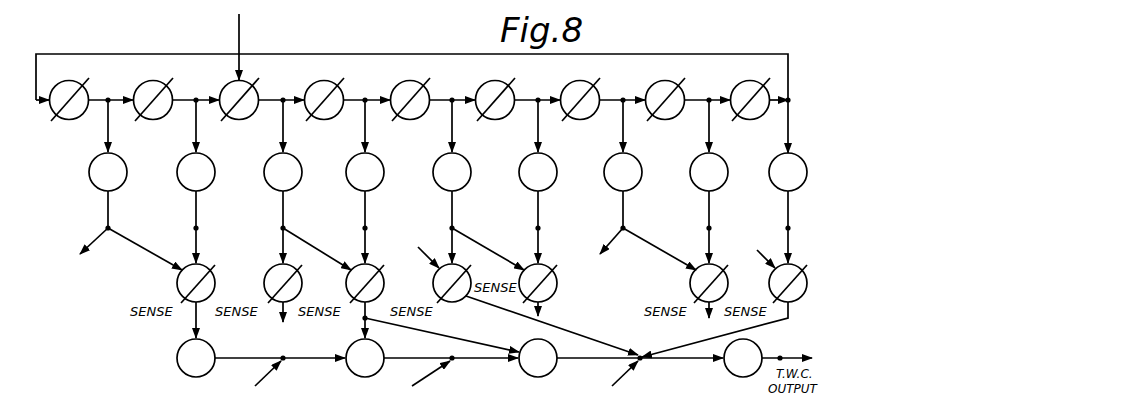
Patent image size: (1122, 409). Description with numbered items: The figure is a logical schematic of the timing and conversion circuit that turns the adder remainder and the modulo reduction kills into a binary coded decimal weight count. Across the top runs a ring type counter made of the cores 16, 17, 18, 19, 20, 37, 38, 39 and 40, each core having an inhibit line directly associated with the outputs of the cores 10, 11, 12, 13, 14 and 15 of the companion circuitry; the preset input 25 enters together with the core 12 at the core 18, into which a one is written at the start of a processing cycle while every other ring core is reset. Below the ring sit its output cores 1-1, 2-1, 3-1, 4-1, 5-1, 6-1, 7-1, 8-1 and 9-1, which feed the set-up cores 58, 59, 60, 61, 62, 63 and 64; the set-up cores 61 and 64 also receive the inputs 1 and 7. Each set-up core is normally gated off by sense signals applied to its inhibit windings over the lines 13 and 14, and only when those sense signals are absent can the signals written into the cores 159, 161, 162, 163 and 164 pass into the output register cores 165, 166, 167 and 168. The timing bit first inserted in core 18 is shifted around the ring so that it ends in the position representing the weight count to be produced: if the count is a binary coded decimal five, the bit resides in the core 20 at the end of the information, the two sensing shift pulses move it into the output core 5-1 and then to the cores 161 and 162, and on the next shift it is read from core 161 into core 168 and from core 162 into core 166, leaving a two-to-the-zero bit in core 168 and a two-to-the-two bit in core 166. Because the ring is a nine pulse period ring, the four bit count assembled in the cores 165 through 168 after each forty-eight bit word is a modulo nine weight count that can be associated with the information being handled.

The core 16 is at (70, 99).
The core 17 is at (154, 99).
The core 18 is at (240, 99).
The core 19 is at (325, 99).
The core 20 is at (411, 99).
The core 37 is at (496, 99).
The core 38 is at (581, 99).
The core 39 is at (666, 99).
The core 40 is at (751, 99).
The core 10 is at (276, 82).
The core 11 is at (646, 82).
The core 15 is at (276, 82).
The core 12 is at (229, 46).
The preset timing pulse T25 25 is at (259, 19).
The output core 1-1 is at (108, 172).
The output core 2-1 is at (196, 172).
The output core 3-1 is at (283, 172).
The output core 4-1 is at (365, 172).
The output core 5-1 is at (452, 172).
The output core 6-1 is at (538, 172).
The output core 7-1 is at (623, 172).
The output core 8-1 is at (709, 172).
The output core 9-1 is at (788, 172).
The wire W1 1 is at (421, 250).
The wire W7 7 is at (759, 250).
The core 13 is at (516, 258).
The core 14 is at (520, 258).
The set-up core 58 is at (196, 283).
The set-up core 59 is at (283, 283).
The set-up core 60 is at (365, 283).
The set-up core 61 is at (452, 283).
The set-up core 62 is at (538, 283).
The set-up core 63 is at (709, 283).
The set-up core 64 is at (788, 283).
The output register core 165 is at (196, 358).
The output register core 166 is at (460, 339).
The output register core 167 is at (621, 339).
The output register core 168 is at (538, 339).
The core 161 is at (78, 250).
The core 162 is at (254, 382).
The core 163 is at (421, 382).
The core 164 is at (602, 250).
The core 159 is at (612, 382).